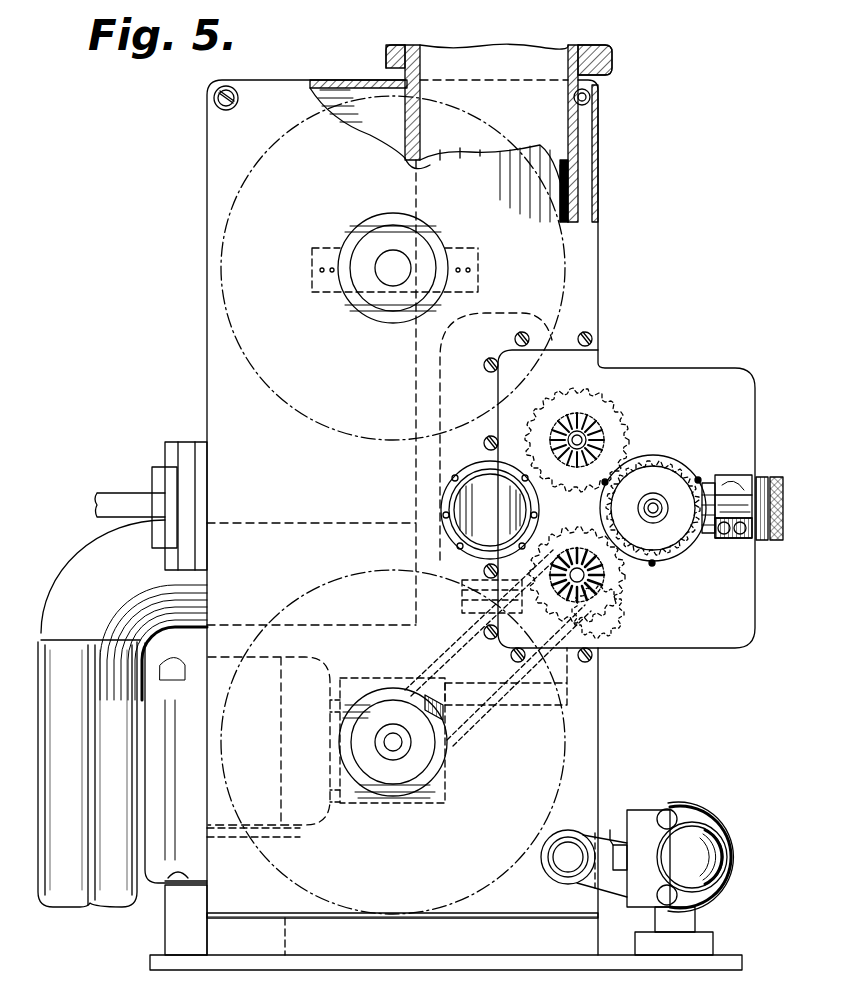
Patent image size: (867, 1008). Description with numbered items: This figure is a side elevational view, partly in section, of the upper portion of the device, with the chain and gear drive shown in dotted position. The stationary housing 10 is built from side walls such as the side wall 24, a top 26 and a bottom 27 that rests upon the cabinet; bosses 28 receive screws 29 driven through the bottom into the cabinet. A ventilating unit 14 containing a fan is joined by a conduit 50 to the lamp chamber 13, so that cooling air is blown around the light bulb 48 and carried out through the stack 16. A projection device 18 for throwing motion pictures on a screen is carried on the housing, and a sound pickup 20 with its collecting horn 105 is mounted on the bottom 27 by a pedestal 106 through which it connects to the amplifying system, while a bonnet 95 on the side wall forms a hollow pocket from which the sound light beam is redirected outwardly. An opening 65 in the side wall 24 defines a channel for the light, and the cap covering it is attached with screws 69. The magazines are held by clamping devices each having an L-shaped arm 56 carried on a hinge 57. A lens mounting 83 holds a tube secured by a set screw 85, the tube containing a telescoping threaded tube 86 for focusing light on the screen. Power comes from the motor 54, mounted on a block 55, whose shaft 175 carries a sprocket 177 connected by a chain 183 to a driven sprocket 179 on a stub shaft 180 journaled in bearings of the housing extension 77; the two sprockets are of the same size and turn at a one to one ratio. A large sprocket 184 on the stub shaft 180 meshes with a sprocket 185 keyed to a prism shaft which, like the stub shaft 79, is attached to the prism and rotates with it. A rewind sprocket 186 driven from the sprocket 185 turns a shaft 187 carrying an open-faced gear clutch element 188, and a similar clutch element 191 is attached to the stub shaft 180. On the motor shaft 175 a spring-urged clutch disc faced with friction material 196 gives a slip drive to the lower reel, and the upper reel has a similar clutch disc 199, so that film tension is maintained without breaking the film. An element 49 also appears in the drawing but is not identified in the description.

The stationary housing 10 is at (205, 220).
The lamp chamber 13 is at (578, 192).
The ventilating unit 14 is at (60, 892).
The stack 16 is at (605, 58).
The projection device 18 is at (731, 472).
The sound pickup 20 is at (733, 810).
The side wall 24 is at (214, 385).
The top 26 is at (352, 80).
The bottom 27 is at (193, 970).
The bosses 28 is at (165, 930).
The screws 29 is at (181, 870).
The light bulb 48 is at (440, 385).
The hopper chute 49 is at (560, 235).
The conduit 50 is at (97, 527).
The motor 54 is at (328, 655).
The block 55 is at (285, 943).
The L-shaped arm 56 is at (136, 493).
The hinge 57 is at (165, 456).
The opening 65 is at (708, 848).
The screws 69 is at (455, 490).
The housing extension 77 is at (745, 365).
The stub shaft 79 is at (654, 507).
The lens mounting 83 is at (734, 539).
The set screw 85 is at (748, 487).
The telescoping threaded tube 86 is at (776, 542).
The bonnet 95 is at (562, 865).
The collecting horn 105 is at (617, 844).
The pedestal 106 is at (689, 922).
The shaft 175 is at (393, 750).
The sprocket 177 is at (410, 740).
The driven sprocket 179 is at (603, 618).
The stub shaft 180 is at (603, 549).
The chain 183 is at (438, 654).
The large sprocket 184 is at (617, 598).
The sprocket 185 is at (685, 467).
The rewind sprocket 186 is at (600, 430).
The shaft 187 is at (579, 438).
The open-faced gear clutch element 188 is at (615, 450).
The clutch element 191 is at (618, 575).
The friction material 196 is at (448, 742).
The clutch disc 199 is at (415, 245).